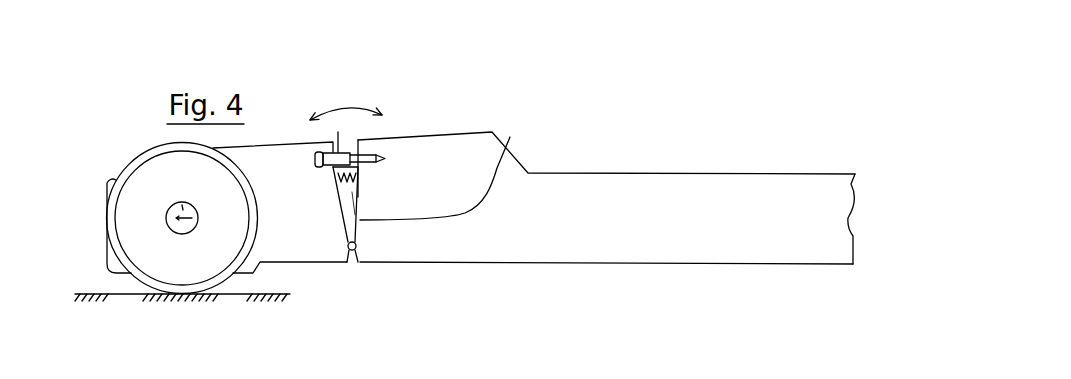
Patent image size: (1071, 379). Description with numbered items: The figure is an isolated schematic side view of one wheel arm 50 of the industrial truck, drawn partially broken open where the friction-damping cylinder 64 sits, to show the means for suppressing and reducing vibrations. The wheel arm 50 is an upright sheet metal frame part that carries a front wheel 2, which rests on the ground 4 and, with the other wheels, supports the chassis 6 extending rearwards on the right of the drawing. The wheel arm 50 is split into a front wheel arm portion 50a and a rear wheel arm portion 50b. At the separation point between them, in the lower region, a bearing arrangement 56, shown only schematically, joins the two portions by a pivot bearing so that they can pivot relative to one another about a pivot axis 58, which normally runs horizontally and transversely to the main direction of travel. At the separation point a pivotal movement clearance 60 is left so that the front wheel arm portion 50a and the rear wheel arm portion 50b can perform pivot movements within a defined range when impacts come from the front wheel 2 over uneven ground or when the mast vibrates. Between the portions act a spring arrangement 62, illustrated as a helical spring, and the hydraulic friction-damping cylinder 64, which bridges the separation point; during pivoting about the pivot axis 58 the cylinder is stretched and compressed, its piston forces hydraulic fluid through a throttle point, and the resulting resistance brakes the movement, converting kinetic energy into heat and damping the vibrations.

The front wheel 2 is at (138, 203).
The ground 4 is at (97, 288).
The chassis 6 is at (565, 232).
The wheel arm 50 is at (433, 192).
The front wheel arm portion 50a is at (293, 223).
The rear wheel arm portion 50b is at (432, 240).
The bearing arrangement 56 is at (356, 250).
The pivot axis 58 is at (352, 250).
The pivotal movement clearance 60 is at (449, 165).
The spring arrangement 62 is at (358, 197).
The friction-damping cylinder 64 is at (338, 132).